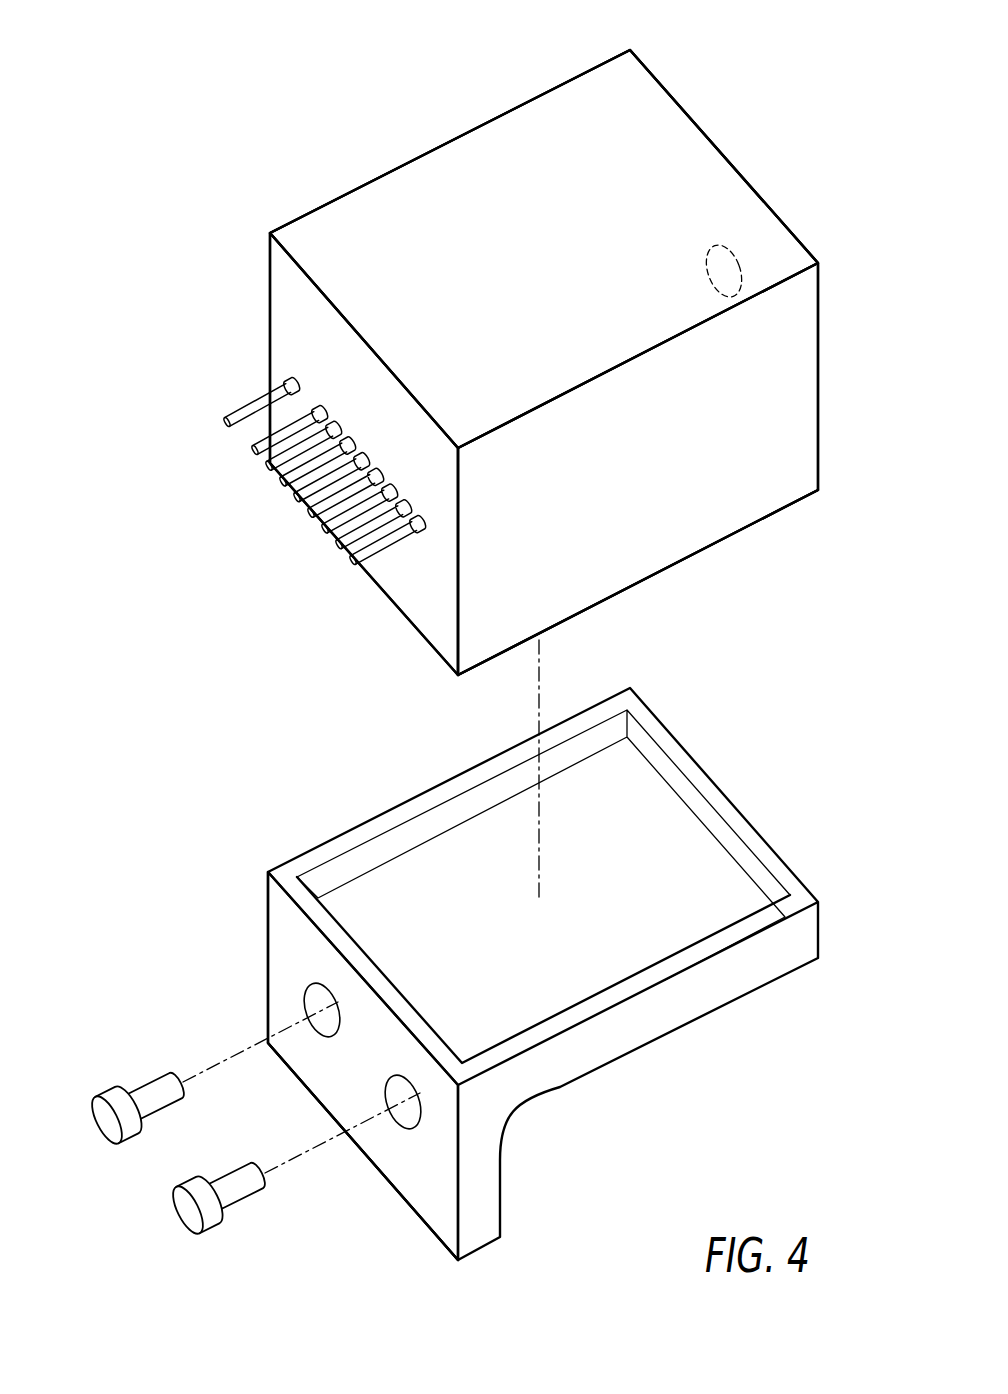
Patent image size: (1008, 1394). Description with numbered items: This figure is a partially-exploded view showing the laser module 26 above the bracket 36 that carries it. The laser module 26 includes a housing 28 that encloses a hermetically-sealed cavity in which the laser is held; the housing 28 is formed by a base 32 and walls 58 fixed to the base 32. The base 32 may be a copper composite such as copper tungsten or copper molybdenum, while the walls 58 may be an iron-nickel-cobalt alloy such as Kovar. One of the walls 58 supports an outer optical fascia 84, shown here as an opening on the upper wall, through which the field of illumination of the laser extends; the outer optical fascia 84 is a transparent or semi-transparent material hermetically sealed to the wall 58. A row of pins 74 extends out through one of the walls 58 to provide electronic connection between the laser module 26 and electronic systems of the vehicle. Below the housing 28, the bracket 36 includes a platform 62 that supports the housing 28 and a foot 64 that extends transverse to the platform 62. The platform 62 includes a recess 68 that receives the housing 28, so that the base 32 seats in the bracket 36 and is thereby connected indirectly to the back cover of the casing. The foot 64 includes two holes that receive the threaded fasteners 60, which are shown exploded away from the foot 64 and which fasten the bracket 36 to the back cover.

The laser module 26 is at (679, 73).
The housing 28 is at (338, 198).
The walls 58 is at (710, 168).
The outer optical fascia 84 is at (740, 245).
The connector pins 74 is at (338, 552).
The base 32 is at (712, 548).
The platform 62 is at (770, 860).
The recess 68 is at (662, 857).
The foot 64 is at (423, 1180).
The bracket 36 is at (438, 1243).
The threaded fasteners 60 is at (107, 1141).